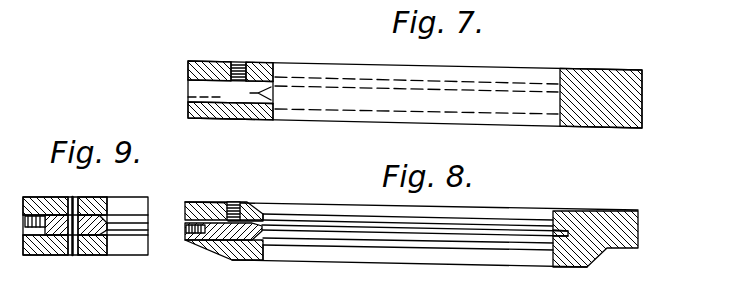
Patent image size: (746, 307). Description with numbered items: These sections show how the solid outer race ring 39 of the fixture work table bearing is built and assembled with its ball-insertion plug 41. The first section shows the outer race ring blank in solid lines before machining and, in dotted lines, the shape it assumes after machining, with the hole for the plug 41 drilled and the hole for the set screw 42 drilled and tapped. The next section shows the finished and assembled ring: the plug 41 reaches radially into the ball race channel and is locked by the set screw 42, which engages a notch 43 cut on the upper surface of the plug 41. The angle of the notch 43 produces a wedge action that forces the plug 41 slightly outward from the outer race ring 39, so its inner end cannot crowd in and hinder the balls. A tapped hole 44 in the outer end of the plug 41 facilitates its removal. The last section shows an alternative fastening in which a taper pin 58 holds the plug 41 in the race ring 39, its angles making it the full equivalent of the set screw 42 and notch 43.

In FIG. 7, the outer race ring 39 is at (628, 93).
In FIG. 8, the outer race ring 39 is at (625, 222).
In FIG. 9, the outer race ring 39 is at (95, 257).
In FIG. 8, the plug 41 is at (222, 242).
In FIG. 9, the plug 41 is at (63, 238).
In FIG. 8, the set screw 42 is at (233, 204).
In FIG. 8, the notch 43 is at (244, 220).
In FIG. 8, the tapped hole 44 is at (193, 239).
In FIG. 9, the tapped hole 44 is at (32, 257).
In FIG. 9, the taper pin 58 is at (72, 198).